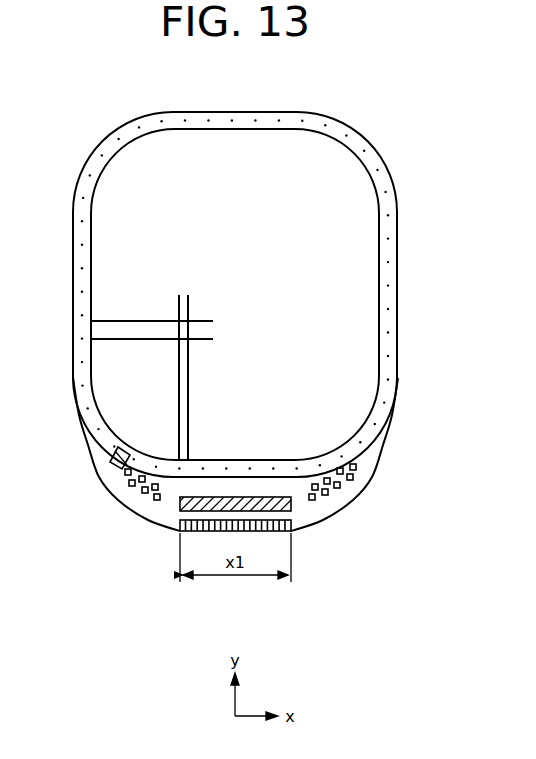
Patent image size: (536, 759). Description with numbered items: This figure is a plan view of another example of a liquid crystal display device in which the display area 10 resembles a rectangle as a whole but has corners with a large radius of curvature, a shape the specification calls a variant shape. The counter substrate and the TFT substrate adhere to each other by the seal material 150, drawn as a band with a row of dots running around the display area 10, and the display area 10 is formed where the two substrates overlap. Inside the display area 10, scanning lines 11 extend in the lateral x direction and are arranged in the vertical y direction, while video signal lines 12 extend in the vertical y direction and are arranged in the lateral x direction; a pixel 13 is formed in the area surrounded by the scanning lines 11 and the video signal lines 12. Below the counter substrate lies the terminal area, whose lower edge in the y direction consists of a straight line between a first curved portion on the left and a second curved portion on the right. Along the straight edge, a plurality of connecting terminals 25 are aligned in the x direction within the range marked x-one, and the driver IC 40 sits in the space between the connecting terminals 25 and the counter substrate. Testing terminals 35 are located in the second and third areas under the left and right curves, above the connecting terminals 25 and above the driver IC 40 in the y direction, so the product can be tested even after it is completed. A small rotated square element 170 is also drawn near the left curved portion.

The display area 10 is at (355, 268).
The seal material 150 is at (388, 327).
The scanning lines 11 is at (126, 321).
The video signal lines 12 is at (189, 383).
The pixel 13 is at (184, 327).
The rotated square element 170 is at (114, 458).
The testing terminals 35 is at (120, 482).
The driver IC 40 is at (180, 504).
The connecting terminals 25 is at (180, 526).